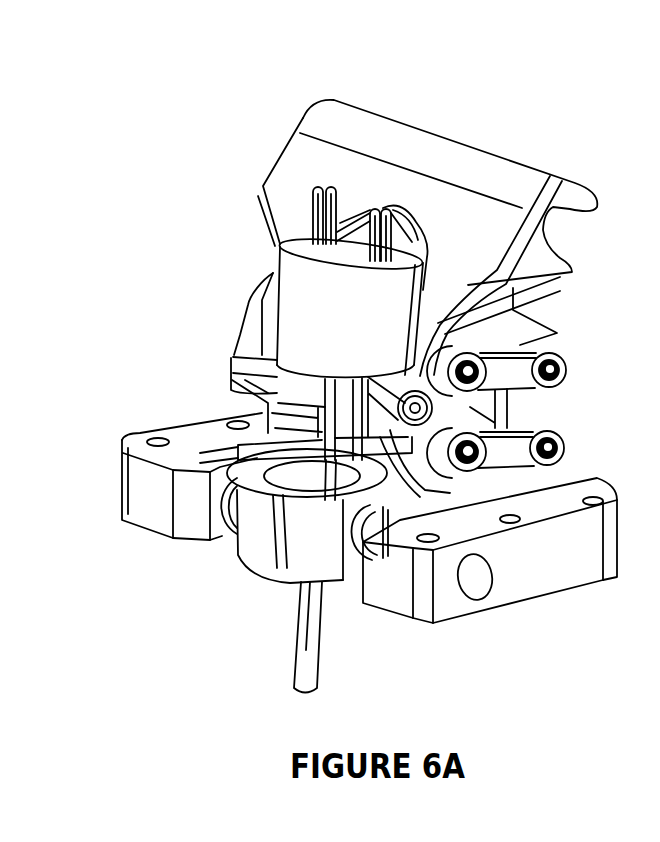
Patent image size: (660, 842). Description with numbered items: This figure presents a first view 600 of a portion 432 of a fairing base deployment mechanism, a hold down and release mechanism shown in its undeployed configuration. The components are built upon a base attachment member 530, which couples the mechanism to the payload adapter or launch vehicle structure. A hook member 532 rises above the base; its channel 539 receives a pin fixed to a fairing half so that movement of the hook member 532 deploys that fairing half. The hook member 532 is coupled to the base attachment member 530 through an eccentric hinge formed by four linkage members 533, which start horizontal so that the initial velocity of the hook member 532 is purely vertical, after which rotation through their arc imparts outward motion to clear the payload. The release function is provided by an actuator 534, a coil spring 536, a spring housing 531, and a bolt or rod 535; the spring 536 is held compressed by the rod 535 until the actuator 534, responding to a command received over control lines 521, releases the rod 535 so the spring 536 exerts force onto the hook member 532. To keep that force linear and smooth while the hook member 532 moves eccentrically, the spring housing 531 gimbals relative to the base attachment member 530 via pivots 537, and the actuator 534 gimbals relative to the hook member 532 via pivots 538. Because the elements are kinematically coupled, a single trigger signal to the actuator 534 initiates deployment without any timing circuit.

The first view 600 is at (183, 114).
The portion 432 is at (249, 173).
The control lines 521 is at (363, 250).
The base attachment member 530 is at (569, 568).
The spring housing 531 is at (300, 534).
The hook member 532 is at (479, 174).
The linkage members 533 is at (567, 436).
The actuator 534 is at (291, 308).
The rod 535 is at (289, 675).
The coil spring 536 is at (273, 444).
The pivots 537 is at (226, 520).
The pivots 538 is at (404, 386).
The channel 539 is at (560, 229).